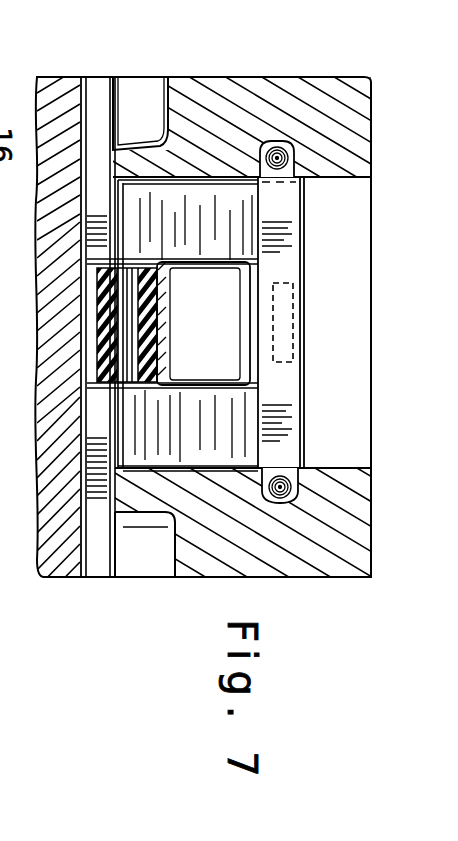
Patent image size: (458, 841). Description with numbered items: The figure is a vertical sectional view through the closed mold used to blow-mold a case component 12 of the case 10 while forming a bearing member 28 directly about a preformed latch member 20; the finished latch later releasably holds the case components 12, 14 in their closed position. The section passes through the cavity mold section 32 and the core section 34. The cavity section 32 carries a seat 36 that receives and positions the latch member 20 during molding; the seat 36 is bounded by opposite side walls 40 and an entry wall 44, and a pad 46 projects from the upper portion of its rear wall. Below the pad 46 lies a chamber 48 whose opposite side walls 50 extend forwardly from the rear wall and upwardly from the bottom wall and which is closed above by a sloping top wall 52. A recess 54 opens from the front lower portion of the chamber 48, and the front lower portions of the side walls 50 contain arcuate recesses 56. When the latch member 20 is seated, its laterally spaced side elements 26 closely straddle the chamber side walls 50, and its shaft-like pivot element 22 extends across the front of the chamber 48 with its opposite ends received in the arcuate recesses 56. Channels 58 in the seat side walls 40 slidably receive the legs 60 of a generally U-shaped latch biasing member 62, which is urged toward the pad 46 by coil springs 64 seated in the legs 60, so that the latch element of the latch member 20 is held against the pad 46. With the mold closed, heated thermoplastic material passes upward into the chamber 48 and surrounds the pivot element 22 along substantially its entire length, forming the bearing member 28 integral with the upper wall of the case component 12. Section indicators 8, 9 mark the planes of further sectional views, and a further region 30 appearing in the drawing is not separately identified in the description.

The section line 8- 8 is at (422, 313).
The section line 9- 9 is at (394, 255).
The case 10 is at (352, 176).
The case component 12 is at (140, 582).
The case component 14 is at (124, 500).
The latch member 20 is at (218, 179).
The pivot element 22 is at (185, 197).
The side elements 26 is at (225, 472).
The bearing member 28 is at (85, 392).
The lower chamber 30 is at (168, 443).
The cavity mold section 32 is at (373, 578).
The core mold section 34 is at (14, 818).
The seat 36 is at (74, 395).
The side walls 40 is at (352, 464).
The entry wall 44 is at (38, 548).
The pad 46 is at (305, 296).
The chamber 48 is at (301, 380).
The side walls 50 is at (160, 262).
The top wall 52 is at (162, 300).
The recess 54 is at (170, 308).
The arcuate recesses 56 is at (75, 272).
The channels 58 is at (290, 155).
The legs 60 is at (273, 142).
The latch biasing member 62 is at (333, 433).
The resiliently extensible and compressible members 64 is at (267, 140).